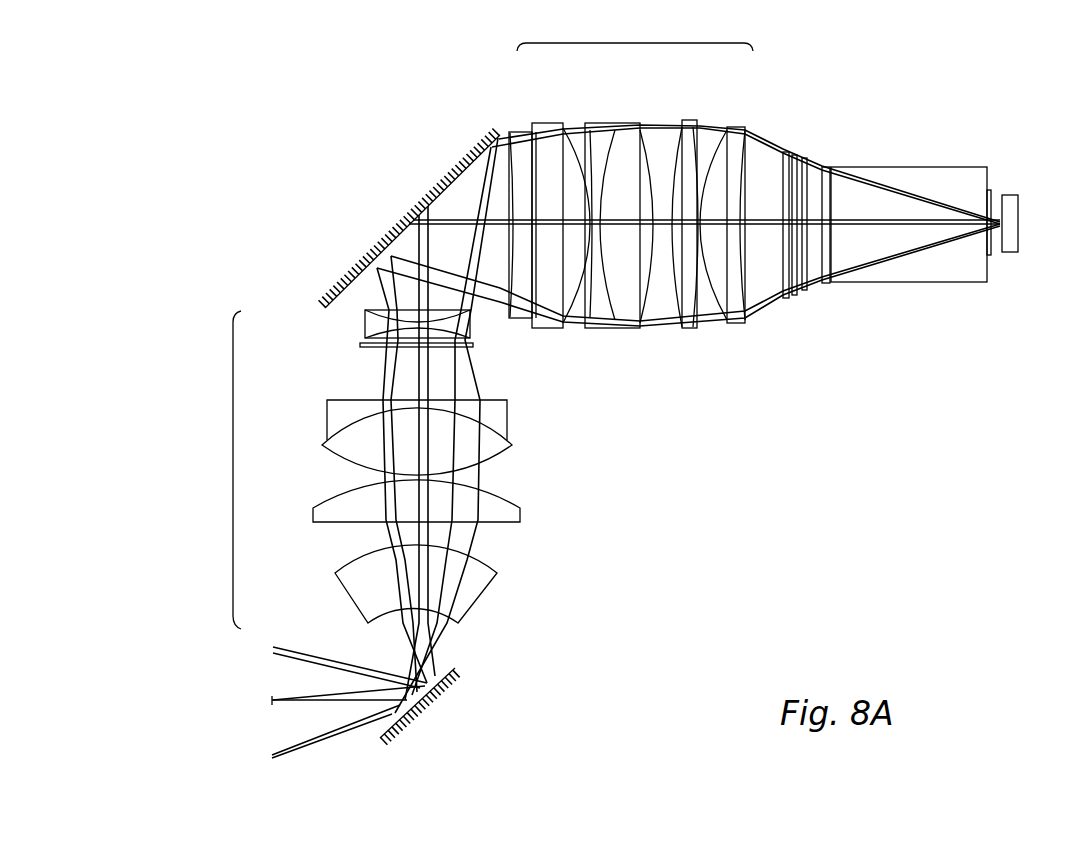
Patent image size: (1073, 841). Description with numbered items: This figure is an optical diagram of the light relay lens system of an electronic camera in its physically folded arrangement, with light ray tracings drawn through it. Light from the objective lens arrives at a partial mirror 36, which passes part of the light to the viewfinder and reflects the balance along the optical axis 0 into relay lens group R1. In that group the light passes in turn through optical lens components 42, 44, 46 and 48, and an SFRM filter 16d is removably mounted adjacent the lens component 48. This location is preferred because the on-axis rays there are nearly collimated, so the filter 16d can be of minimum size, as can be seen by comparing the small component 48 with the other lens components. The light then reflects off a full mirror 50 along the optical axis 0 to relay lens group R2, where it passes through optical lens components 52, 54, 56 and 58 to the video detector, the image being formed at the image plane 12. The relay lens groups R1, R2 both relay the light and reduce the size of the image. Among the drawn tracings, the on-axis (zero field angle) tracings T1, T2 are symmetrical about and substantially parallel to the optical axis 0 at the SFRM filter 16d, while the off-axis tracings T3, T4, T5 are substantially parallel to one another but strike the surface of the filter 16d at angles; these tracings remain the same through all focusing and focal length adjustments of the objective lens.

The image plane 12 is at (1019, 208).
The SFRM filter 16d is at (362, 348).
The partial mirror 36 is at (443, 667).
The optical lens component 42 is at (487, 595).
The optical lens component 44 is at (322, 507).
The optical lens component 46 is at (325, 443).
The optical lens component 48 is at (363, 318).
The full mirror 50 is at (356, 283).
The optical lens component 52 is at (542, 127).
The optical lens component 54 is at (603, 122).
The optical lens component 56 is at (690, 120).
The optical lens component 58 is at (733, 128).
The relay lens group R1 is at (216, 470).
The relay lens group R2 is at (635, 31).
The on-axis light ray tracing T1 is at (287, 614).
The on-axis light ray tracing T2 is at (362, 732).
The off-axis light ray tracing T3 is at (273, 654).
The off-axis light ray tracing T4 is at (288, 696).
The off-axis light ray tracing T5 is at (320, 735).
The optical axis 0 is at (323, 707).